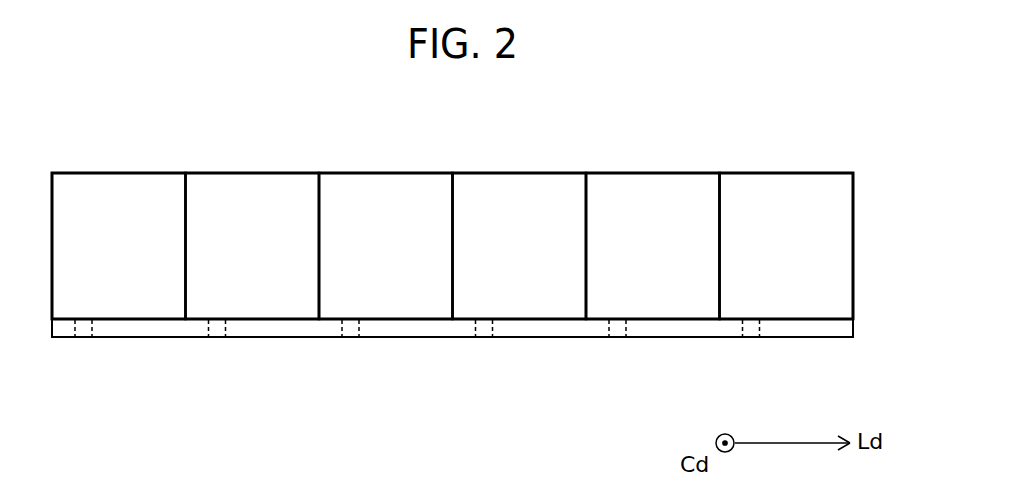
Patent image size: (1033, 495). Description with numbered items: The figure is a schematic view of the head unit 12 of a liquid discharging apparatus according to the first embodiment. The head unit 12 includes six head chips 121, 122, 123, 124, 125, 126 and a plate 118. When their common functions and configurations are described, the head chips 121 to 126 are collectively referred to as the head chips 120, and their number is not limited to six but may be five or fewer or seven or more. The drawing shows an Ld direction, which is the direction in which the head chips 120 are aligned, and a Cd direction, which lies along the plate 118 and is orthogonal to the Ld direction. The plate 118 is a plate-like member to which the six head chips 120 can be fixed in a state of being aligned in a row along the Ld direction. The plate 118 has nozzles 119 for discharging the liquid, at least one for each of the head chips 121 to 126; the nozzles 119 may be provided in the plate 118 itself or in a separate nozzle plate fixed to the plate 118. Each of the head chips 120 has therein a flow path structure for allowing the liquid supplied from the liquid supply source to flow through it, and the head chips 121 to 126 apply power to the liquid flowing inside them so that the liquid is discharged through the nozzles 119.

The head unit 12 is at (80, 137).
The plate 118 is at (157, 338).
The nozzles 119 is at (84, 352).
The head chips 120 is at (474, 223).
The head chip 121 is at (87, 172).
The head chip 122 is at (204, 172).
The head chip 123 is at (343, 172).
The head chip 124 is at (482, 172).
The head chip 125 is at (621, 172).
The head chip 126 is at (773, 172).